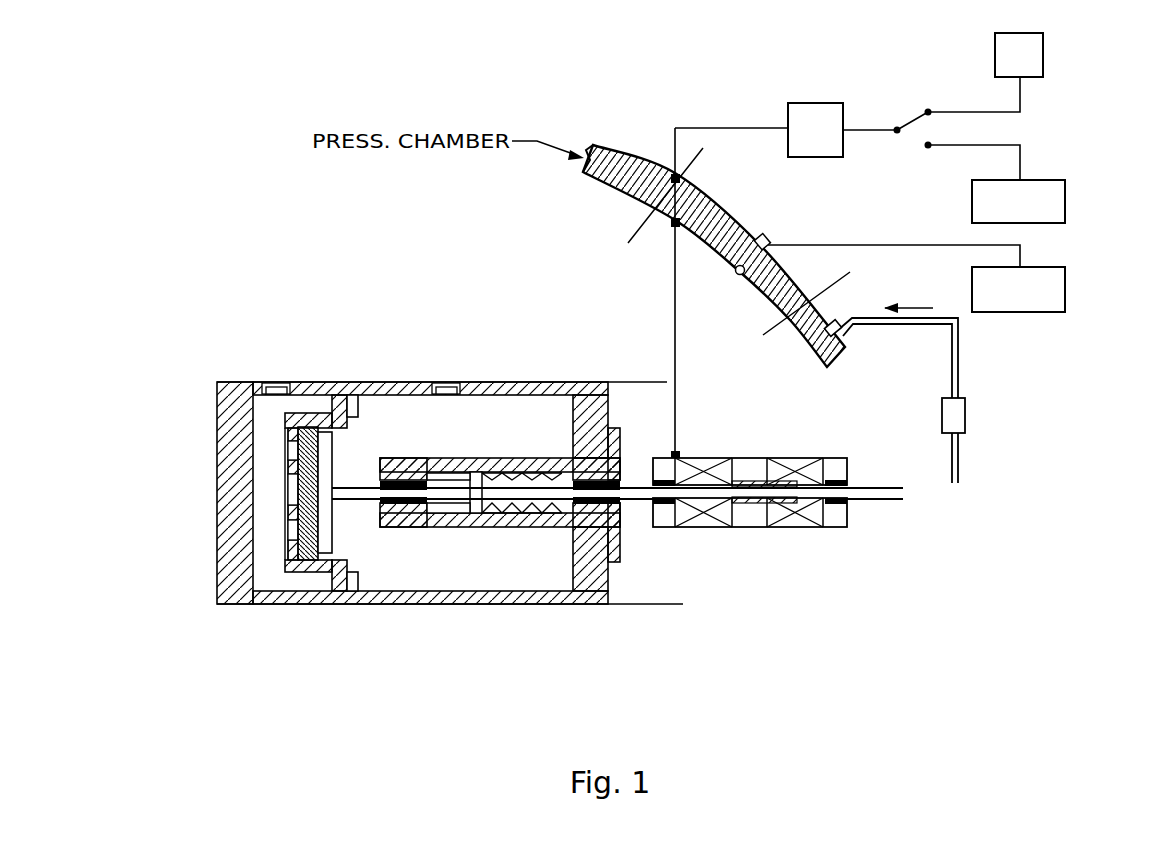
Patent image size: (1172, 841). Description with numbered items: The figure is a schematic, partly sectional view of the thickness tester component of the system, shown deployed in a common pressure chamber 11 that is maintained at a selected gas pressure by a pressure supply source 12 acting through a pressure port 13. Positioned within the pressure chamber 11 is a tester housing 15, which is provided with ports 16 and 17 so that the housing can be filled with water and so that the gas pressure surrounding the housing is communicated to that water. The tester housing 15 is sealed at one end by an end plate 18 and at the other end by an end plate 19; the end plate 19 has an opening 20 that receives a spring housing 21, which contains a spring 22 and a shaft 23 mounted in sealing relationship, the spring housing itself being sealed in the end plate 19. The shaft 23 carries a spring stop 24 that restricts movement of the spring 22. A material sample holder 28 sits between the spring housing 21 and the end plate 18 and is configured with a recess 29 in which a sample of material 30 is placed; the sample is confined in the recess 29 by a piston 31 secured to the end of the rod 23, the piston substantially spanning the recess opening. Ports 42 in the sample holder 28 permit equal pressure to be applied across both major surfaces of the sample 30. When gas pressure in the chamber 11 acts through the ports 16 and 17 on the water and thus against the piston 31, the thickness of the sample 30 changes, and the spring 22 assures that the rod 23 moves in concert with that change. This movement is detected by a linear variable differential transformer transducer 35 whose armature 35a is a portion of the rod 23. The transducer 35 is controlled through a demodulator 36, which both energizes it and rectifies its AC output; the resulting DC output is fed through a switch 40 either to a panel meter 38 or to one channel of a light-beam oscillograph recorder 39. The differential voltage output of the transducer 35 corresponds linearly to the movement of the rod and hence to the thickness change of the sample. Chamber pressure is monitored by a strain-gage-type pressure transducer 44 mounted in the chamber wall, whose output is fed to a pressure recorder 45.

The pressure chamber 11 is at (637, 160).
The pressure supply source 12 is at (964, 421).
The pressure port 13 is at (818, 348).
The tester housing 15 is at (257, 604).
The port 16 is at (282, 382).
The port 17 is at (455, 383).
The end plate 18 is at (228, 508).
The end plate 19 is at (600, 583).
The opening 20 is at (612, 432).
The spring housing 21 is at (450, 527).
The spring 22 is at (532, 527).
The shaft 23 is at (412, 491).
The spring stop 24 is at (495, 471).
The material sample holder 28 is at (318, 572).
The recess 29 is at (290, 542).
The sample of material 30 is at (300, 452).
The piston 31 is at (326, 466).
The linear variable differential transformer transducer 35 is at (818, 516).
The armature 35a is at (745, 505).
The demodulator 36 is at (818, 108).
The panel meter 38 is at (1033, 47).
The light-beam oscillograph recorder 39 is at (1055, 208).
The switch 40 is at (928, 110).
The ports 42 is at (290, 490).
The strain-gage-type pressure transducer 44 is at (736, 273).
The pressure recorder 45 is at (1055, 294).